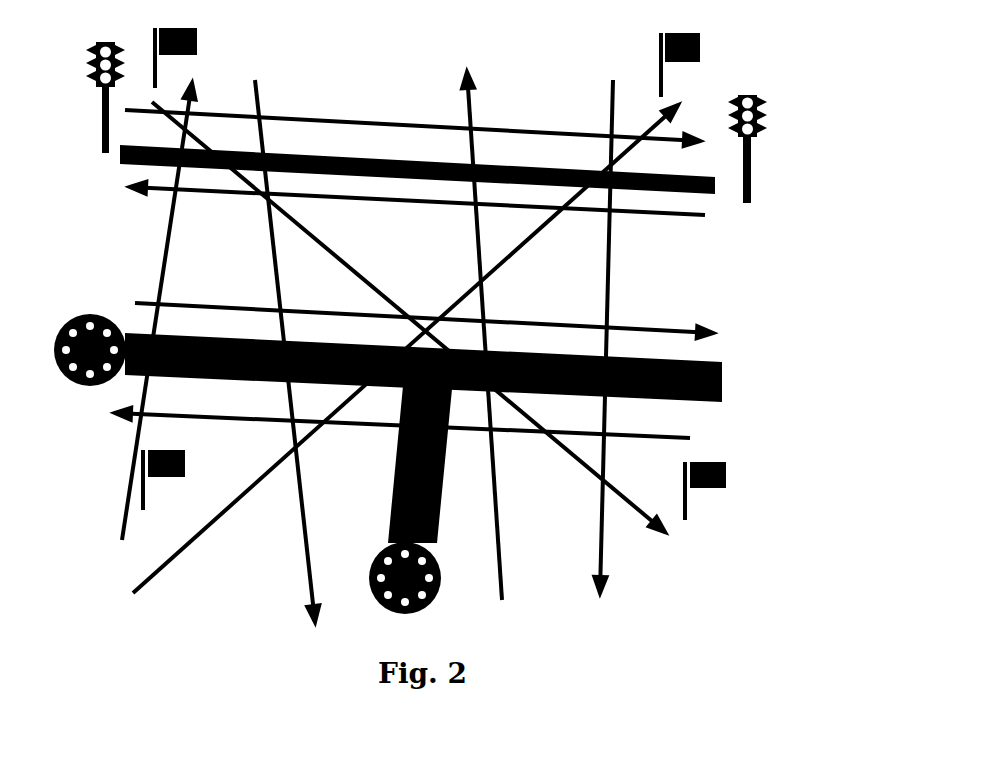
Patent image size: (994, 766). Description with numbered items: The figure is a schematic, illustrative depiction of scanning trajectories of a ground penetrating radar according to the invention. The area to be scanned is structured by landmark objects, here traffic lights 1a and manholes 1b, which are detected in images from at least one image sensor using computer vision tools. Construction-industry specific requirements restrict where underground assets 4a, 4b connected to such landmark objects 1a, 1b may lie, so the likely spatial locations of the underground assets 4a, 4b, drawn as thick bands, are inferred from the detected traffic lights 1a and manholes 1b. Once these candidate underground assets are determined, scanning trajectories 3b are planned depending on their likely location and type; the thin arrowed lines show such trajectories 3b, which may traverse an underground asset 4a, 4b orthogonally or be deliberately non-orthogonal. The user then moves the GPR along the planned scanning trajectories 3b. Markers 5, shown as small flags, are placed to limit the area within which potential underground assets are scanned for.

The traffic light 1a is at (454, 103).
The manhole 1b is at (288, 440).
The scanning trajectory 3b is at (414, 261).
The underground asset 4a is at (466, 192).
The underground asset 4b is at (460, 438).
The marker 5 is at (468, 260).